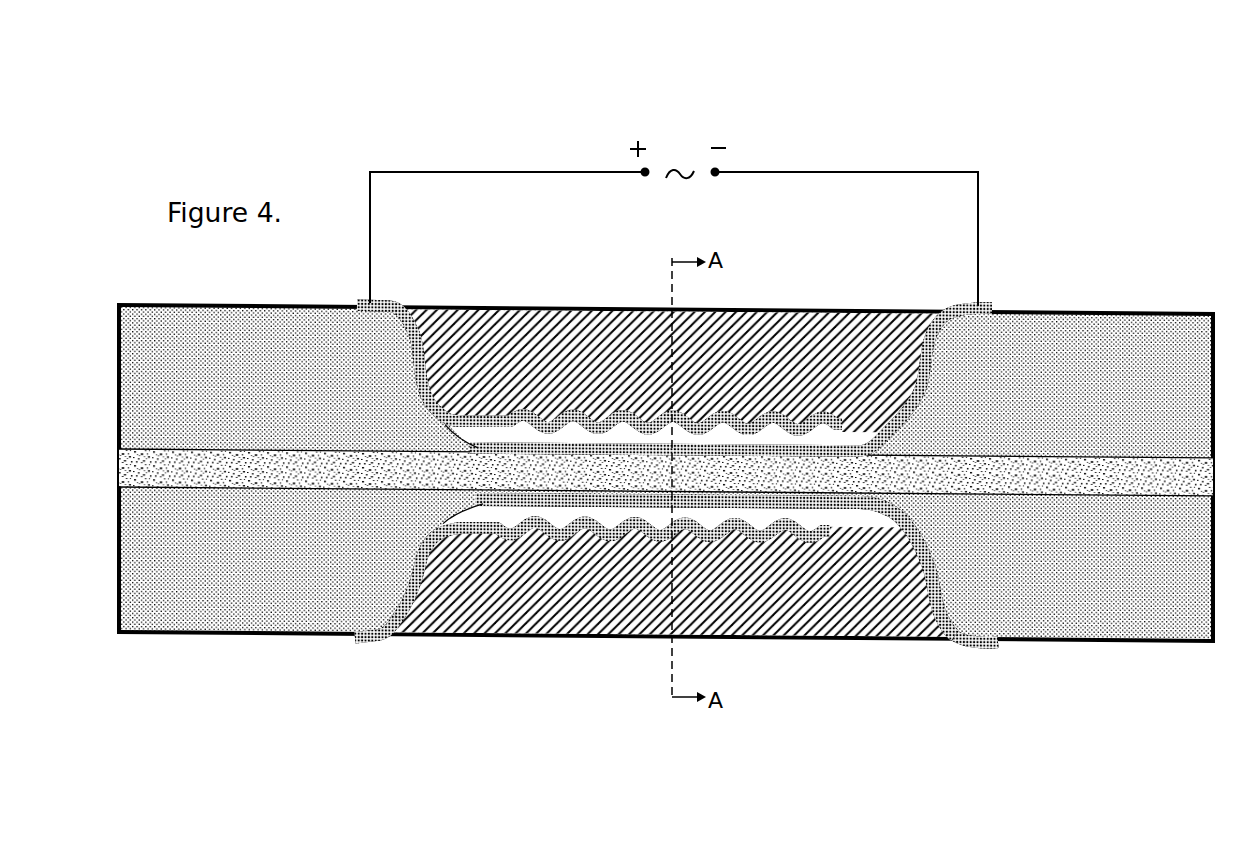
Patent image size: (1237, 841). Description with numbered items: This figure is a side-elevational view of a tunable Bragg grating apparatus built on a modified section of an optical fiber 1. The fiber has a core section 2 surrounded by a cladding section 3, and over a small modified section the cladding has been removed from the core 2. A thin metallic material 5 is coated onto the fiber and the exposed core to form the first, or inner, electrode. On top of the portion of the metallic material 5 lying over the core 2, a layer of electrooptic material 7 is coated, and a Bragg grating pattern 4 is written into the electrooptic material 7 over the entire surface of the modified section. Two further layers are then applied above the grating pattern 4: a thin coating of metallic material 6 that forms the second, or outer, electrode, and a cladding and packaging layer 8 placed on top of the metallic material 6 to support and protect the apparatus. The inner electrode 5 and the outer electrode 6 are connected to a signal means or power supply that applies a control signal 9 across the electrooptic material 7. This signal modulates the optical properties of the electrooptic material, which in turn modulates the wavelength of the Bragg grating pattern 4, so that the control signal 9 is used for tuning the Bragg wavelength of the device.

The optical fiber 1 is at (1057, 312).
The core section 2 is at (857, 478).
The cladding section 3 is at (221, 585).
The Bragg grating pattern 4 is at (762, 541).
The metallic material (first electrode) 5 is at (975, 650).
The metallic material (second electrode) 6 is at (369, 645).
The electrooptic material 7 is at (622, 418).
The cladding and packaging layer 8 is at (583, 575).
The control signal (power supply) 9 is at (677, 97).